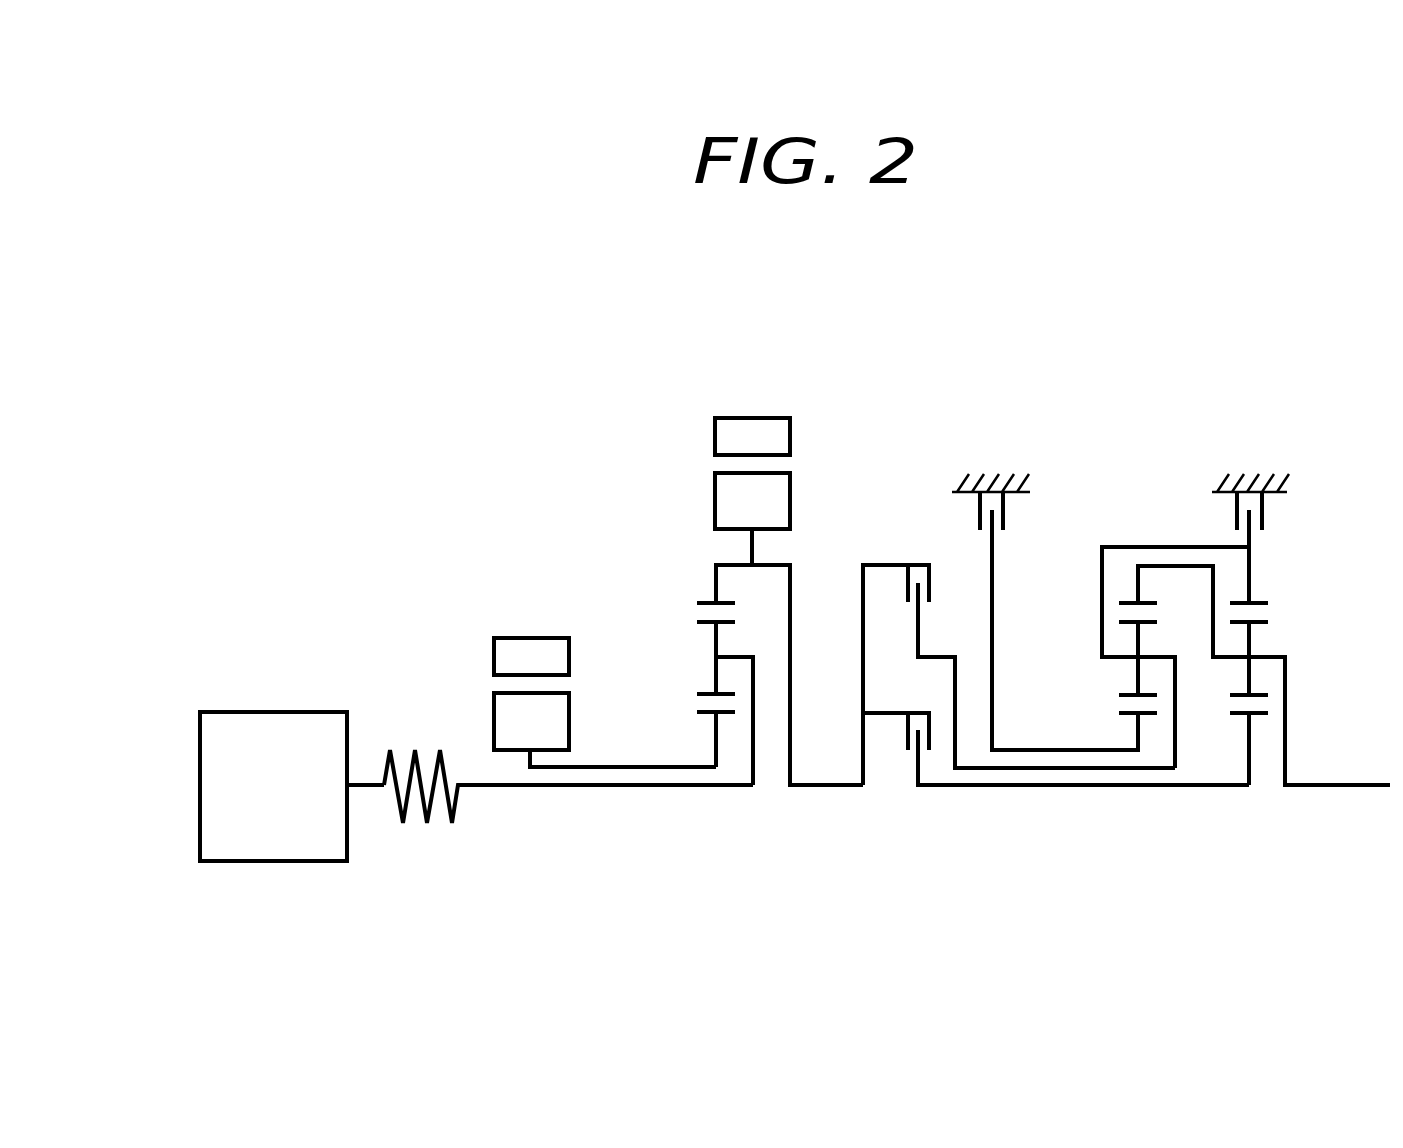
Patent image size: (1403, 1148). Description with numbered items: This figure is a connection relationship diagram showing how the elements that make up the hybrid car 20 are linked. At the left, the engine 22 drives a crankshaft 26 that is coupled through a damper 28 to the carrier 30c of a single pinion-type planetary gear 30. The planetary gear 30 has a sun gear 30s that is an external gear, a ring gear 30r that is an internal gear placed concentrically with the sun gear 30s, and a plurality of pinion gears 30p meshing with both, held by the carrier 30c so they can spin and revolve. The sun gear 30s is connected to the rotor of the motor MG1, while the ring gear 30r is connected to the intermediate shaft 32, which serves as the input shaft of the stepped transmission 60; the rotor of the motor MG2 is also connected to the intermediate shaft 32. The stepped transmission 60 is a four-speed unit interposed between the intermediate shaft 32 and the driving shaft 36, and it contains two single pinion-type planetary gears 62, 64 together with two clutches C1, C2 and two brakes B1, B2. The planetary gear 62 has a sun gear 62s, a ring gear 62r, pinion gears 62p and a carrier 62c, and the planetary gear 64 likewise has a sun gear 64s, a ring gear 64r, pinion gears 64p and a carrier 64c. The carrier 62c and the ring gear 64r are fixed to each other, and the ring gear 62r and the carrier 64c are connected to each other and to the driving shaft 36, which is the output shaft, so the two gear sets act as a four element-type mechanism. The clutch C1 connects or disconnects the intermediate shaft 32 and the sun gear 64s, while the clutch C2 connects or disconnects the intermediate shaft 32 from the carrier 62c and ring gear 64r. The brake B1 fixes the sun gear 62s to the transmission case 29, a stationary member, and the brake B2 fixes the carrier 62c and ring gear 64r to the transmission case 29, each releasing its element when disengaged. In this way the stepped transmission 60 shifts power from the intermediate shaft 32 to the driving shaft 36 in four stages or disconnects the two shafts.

The hybrid car 20 is at (1166, 320).
The engine 22 is at (272, 710).
The crankshaft 26 is at (368, 784).
The damper 28 is at (418, 758).
The transmission case 29 is at (1010, 472).
The planetary gear 30 is at (741, 709).
The ring gear 30r is at (716, 584).
The pinion gears 30p is at (716, 640).
The carrier 30c is at (753, 676).
The sun gear 30s is at (716, 730).
The intermediate shaft 32 is at (816, 788).
The driving shaft 36 is at (1330, 788).
The stepped transmission 60 is at (1208, 623).
The planetary gear 62 is at (1208, 705).
The ring gear 62r is at (1138, 585).
The pinion gears 62p is at (1138, 640).
The carrier 62c is at (1175, 676).
The sun gear 62s is at (1138, 730).
The planetary gear 64 is at (1287, 709).
The ring gear 64r is at (1249, 585).
The carrier 64c is at (1213, 640).
The pinion gears 64p is at (1249, 676).
The sun gear 64s is at (1249, 731).
The brake B1 is at (1005, 508).
The brake B2 is at (1262, 510).
The clutch C1 is at (906, 732).
The clutch C2 is at (906, 582).
The motor MG1 is at (530, 636).
The motor MG2 is at (752, 415).